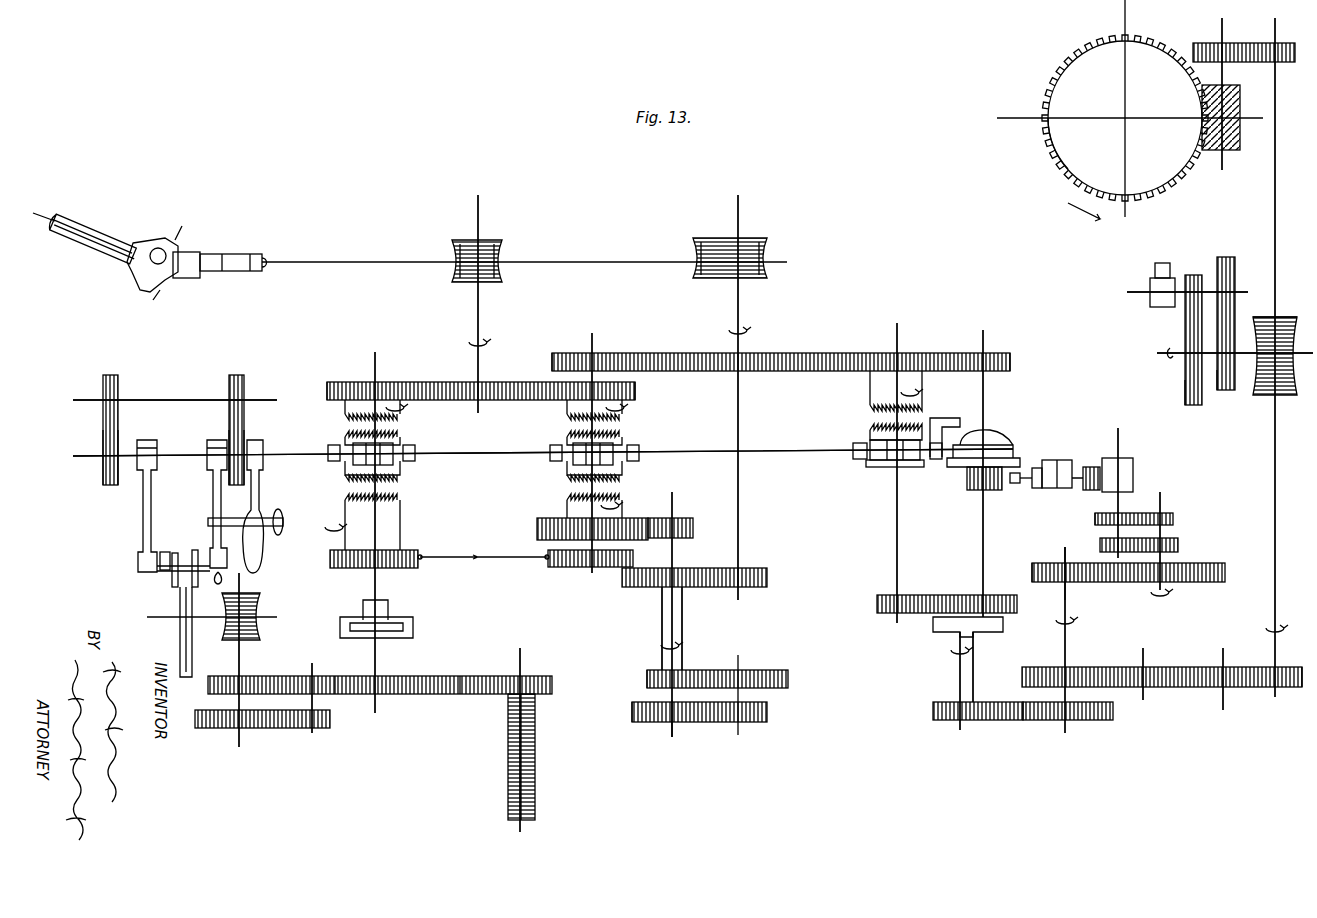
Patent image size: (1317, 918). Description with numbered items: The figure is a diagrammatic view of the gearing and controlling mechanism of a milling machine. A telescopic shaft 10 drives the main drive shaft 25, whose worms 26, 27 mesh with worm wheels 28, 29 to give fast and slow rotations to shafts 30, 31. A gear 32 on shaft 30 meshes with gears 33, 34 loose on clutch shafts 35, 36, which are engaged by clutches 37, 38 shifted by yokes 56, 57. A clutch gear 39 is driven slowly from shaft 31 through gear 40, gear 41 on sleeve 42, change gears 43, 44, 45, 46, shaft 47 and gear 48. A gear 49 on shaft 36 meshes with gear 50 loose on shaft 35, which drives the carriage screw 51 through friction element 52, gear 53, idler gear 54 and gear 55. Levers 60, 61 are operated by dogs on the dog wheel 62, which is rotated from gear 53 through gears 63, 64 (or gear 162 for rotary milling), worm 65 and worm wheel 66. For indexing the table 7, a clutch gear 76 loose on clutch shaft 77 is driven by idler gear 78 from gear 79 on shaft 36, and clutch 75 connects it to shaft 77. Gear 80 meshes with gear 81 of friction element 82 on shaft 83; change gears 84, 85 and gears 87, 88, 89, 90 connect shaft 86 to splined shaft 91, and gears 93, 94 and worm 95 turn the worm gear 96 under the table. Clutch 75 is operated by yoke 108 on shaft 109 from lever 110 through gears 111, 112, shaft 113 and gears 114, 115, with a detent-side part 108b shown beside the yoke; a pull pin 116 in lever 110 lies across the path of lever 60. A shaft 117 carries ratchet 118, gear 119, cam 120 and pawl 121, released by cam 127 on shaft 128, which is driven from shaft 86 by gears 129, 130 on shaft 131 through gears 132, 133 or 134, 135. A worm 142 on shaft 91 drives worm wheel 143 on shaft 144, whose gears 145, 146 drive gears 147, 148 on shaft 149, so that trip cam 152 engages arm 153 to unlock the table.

The table 7 is at (1068, 80).
The telescopic shaft 10 is at (93, 237).
The main drive shaft 25 is at (250, 255).
The worm 26 is at (497, 243).
The worm 27 is at (757, 240).
The worm wheel 28 is at (502, 258).
The worm wheel 29 is at (770, 260).
The shaft 30 is at (480, 312).
The shaft 31 is at (740, 312).
The gear 32 is at (447, 380).
The gear 33 is at (333, 381).
The gear 34 is at (640, 392).
The clutch shaft 35 is at (375, 362).
The clutch shaft 36 is at (590, 350).
The clutch 37 is at (345, 440).
The clutch 38 is at (567, 440).
The clutch gear 39 is at (540, 525).
The gear 40 is at (770, 576).
The gear 41 is at (700, 568).
The sleeve 42 is at (685, 621).
The gear 43 is at (648, 677).
The gear 44 is at (790, 680).
The gear 45 is at (768, 712).
The gear 46 is at (705, 725).
The shaft 47 is at (640, 735).
The gear 48 is at (692, 522).
The gear 49 is at (580, 568).
The gear 50 is at (335, 570).
The carriage screw 51 is at (505, 776).
The friction driving element 52 is at (385, 620).
The gear 53 is at (383, 706).
The idler gear 54 is at (462, 676).
The gear 55 is at (528, 672).
The clutch yoke 56 is at (330, 462).
The clutch yoke 57 is at (552, 458).
The oscillating lever 60 is at (212, 482).
The oscillating lever 61 is at (145, 492).
The dog wheel 62 is at (185, 632).
The gear 63 is at (335, 676).
The gear 64 is at (272, 672).
The worm 65 is at (255, 606).
The worm wheel 66 is at (236, 640).
The clutch 75 is at (875, 440).
The clutch gear 76 is at (877, 389).
The clutch shaft 77 is at (895, 530).
The idler gear 78 is at (765, 352).
The gear 79 is at (616, 355).
The gear 80 is at (877, 603).
The gear 81 is at (950, 595).
The frictional element 82 is at (935, 630).
The shaft 83 is at (958, 676).
The removable gear 84 is at (940, 722).
The removable gear 85 is at (1047, 722).
The shaft 86 is at (1063, 644).
The gear 87 is at (1085, 666).
The gear 88 is at (1160, 667).
The gear 89 is at (1215, 690).
The gear 90 is at (1275, 690).
The splined shaft 91 is at (1275, 475).
The gear 93 is at (1262, 43).
The gear 94 is at (1203, 45).
The worm 95 is at (1235, 150).
The worm gear 96 is at (1060, 168).
The yoke 108 is at (853, 462).
The bracket 108b is at (937, 418).
The shaft 109 is at (775, 456).
The clutch shifting lever 110 is at (256, 435).
The gear 111 is at (229, 440).
The gear 112 is at (233, 375).
The shaft 113 is at (165, 398).
The gear 114 is at (103, 390).
The gear 115 is at (105, 448).
The pull pin 116 is at (283, 524).
The shaft 117 is at (985, 386).
The ratchet 118 is at (967, 483).
The gear 119 is at (1010, 358).
The single lobe cam 120 is at (990, 445).
The ratchet pawl 121 is at (1012, 490).
The cam 127 is at (1090, 467).
The shaft 128 is at (1120, 440).
The gear 129 is at (1085, 583).
The gear 130 is at (1200, 584).
The shaft 131 is at (1160, 592).
The gear 132 is at (1178, 546).
The gear 133 is at (1100, 546).
The gear 134 is at (1175, 519).
The gear 135 is at (1095, 521).
The worm 142 is at (1262, 398).
The worm wheel 143 is at (1268, 313).
The shaft 144 is at (1160, 354).
The gear 145 is at (1185, 396).
The gear 146 is at (1222, 390).
The gear 147 is at (1195, 275).
The gear 148 is at (1230, 260).
The shaft 149 is at (1130, 295).
The trip cam 152 is at (1155, 268).
The arm 153 is at (210, 730).
The gear 162 is at (315, 735).